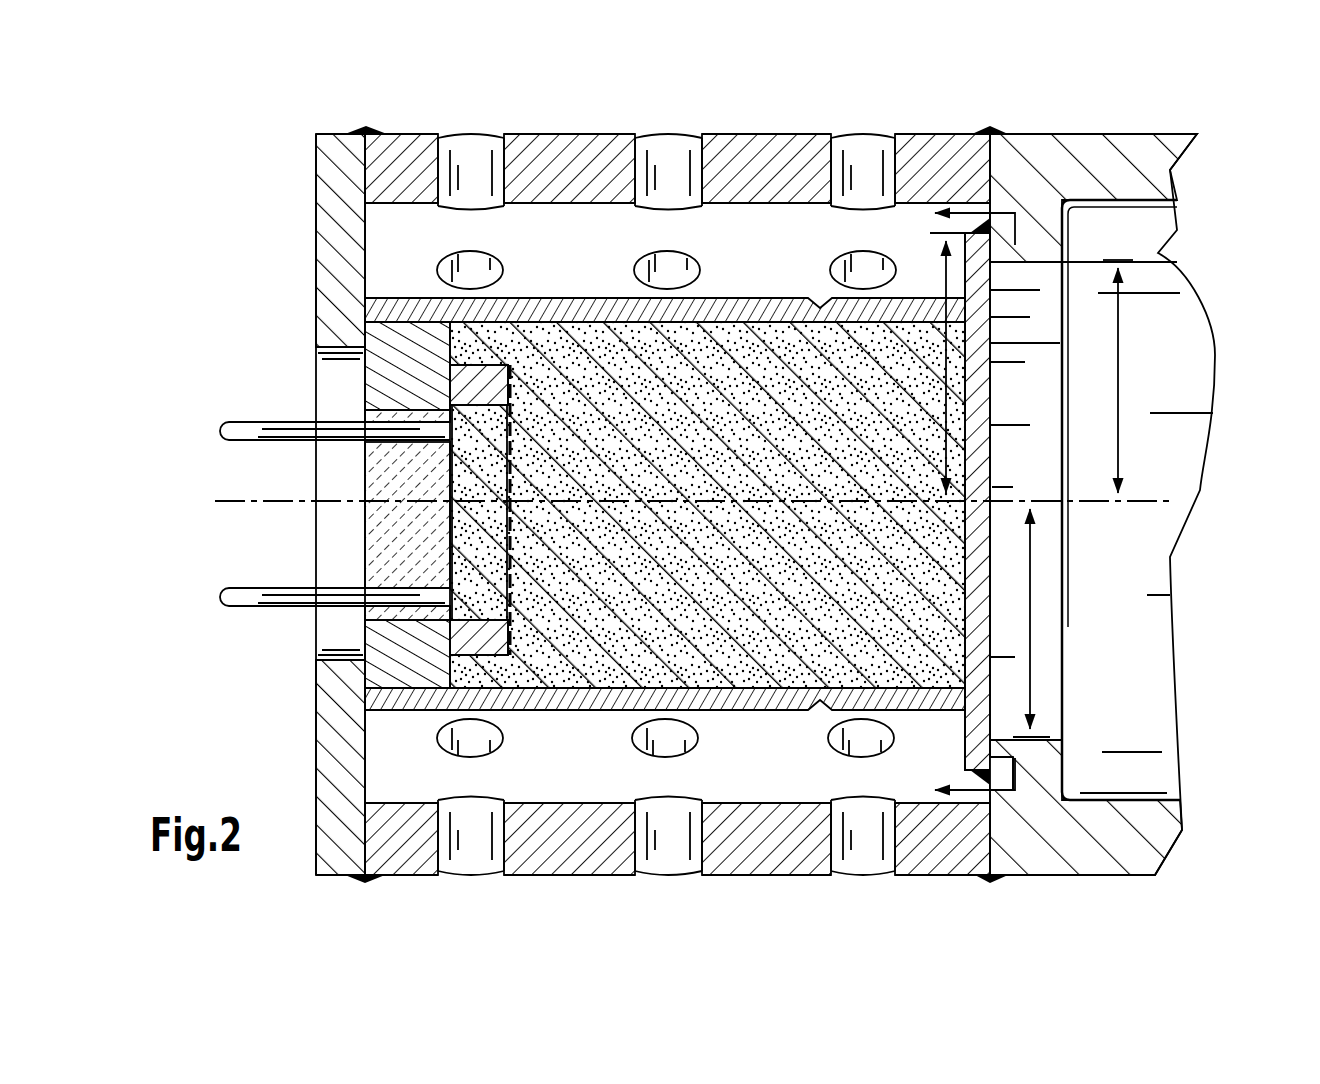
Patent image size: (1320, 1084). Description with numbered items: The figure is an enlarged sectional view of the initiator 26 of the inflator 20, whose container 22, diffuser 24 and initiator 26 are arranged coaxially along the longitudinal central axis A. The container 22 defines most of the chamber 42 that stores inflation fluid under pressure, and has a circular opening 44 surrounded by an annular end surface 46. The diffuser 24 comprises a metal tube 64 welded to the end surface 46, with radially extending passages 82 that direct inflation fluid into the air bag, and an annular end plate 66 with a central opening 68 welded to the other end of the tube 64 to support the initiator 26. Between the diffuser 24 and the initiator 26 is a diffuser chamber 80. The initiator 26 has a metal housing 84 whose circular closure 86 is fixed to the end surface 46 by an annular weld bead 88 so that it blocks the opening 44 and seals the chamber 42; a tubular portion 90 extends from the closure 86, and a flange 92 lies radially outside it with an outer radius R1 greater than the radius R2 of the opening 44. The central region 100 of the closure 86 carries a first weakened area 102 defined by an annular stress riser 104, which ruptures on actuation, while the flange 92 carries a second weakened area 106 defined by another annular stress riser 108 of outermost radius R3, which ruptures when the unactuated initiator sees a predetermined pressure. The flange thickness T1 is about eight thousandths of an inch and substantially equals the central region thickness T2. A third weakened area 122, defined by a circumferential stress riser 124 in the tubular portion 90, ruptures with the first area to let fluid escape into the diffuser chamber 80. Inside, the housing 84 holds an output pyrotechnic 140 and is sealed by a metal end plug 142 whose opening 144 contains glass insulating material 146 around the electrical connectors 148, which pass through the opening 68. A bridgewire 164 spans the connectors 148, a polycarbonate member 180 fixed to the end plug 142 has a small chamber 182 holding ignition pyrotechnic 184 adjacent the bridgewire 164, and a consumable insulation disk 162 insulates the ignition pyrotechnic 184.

The inflator 20 is at (1035, 112).
The container 22 is at (1080, 126).
The diffuser 24 is at (410, 130).
The initiator 26 is at (400, 272).
The chamber 42 is at (1176, 392).
The circular opening 44 is at (1066, 740).
The annular end surface 46 is at (975, 830).
The metal tube 64 is at (535, 160).
The annular end plate 66 is at (348, 740).
The central opening 68 is at (345, 653).
The diffuser chamber 80 is at (612, 789).
The radially extending passages 82 is at (471, 265).
The housing 84 is at (588, 296).
The circular closure 86 is at (1000, 693).
The annular weld bead 88 is at (978, 232).
The tubular portion 90 is at (665, 430).
The flange 92 is at (965, 748).
The central region 100 is at (977, 458).
The first weakened area 102 is at (998, 338).
The annular stress riser 104 is at (978, 352).
The second rupturable weakened area 106 is at (997, 280).
The annular stress riser 108 is at (1062, 260).
The third rupturable weakened area 122 is at (800, 276).
The circumferential stress riser 124 is at (821, 308).
The output pyrotechnic 140 is at (722, 605).
The metal end plug 142 is at (400, 378).
The opening 144 is at (440, 412).
The glass insulating material 146 is at (385, 618).
The electrical connectors 148 is at (245, 603).
The consumable insulation disk 162 is at (507, 605).
The bridgewire 164 is at (450, 560).
The polycarbonate member 180 is at (470, 372).
The chamber 182 is at (470, 615).
The ignition pyrotechnic 184 is at (535, 625).
The longitudinal central axis A is at (1137, 500).
The outer radius R1 is at (935, 363).
The radius R2 is at (1145, 412).
The outermost radius R3 is at (1030, 610).
The thickness T1 is at (998, 707).
The thickness T2 is at (998, 540).